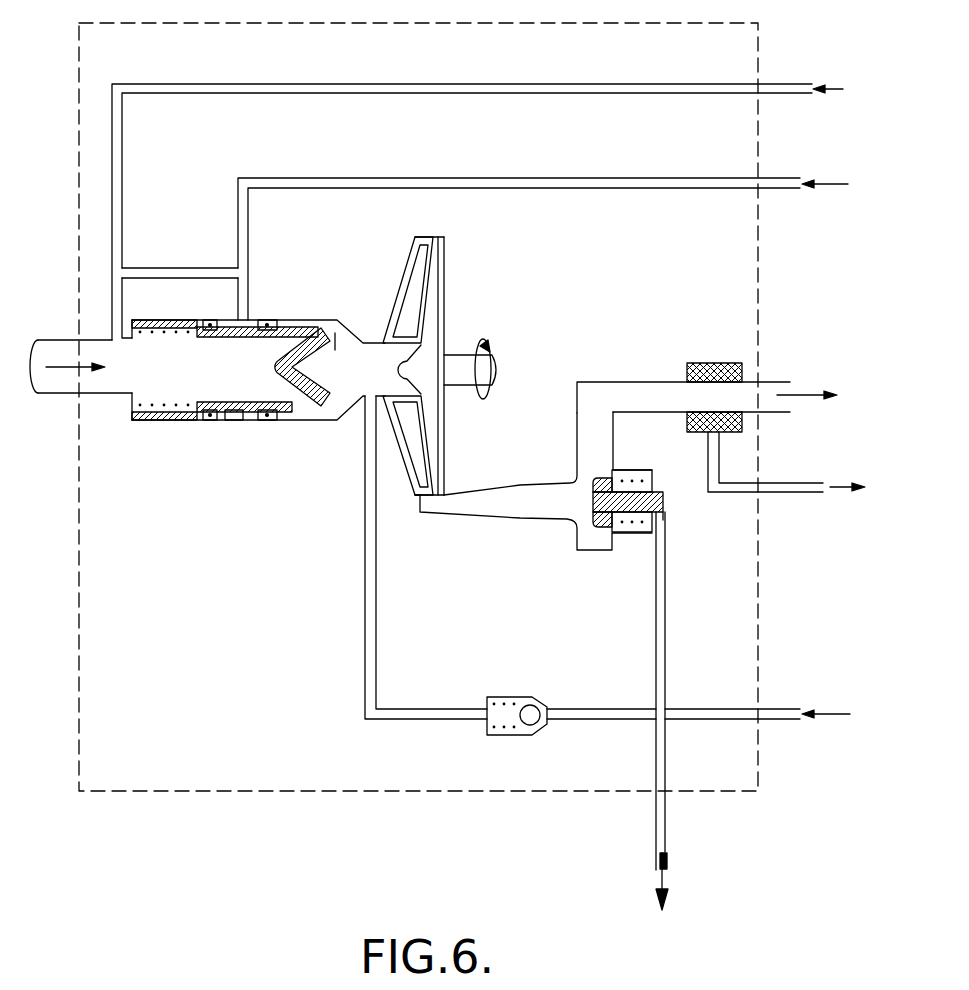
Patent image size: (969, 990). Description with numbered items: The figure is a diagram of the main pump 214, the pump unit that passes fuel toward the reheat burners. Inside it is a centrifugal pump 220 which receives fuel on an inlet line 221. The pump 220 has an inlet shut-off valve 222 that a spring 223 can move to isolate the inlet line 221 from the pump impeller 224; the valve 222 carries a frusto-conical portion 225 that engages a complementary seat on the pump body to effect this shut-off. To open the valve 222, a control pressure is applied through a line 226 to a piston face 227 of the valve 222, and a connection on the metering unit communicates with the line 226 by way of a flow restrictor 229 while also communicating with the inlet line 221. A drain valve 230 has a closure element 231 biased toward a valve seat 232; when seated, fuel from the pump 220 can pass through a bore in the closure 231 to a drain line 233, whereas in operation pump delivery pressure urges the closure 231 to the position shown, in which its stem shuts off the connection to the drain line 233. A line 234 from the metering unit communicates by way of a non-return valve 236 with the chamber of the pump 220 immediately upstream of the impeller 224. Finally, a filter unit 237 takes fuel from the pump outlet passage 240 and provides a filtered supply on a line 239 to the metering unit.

The main pump 214 is at (188, 748).
The centrifugal pump 220 is at (459, 364).
The inlet line 221 is at (58, 390).
The inlet shut-off valve 222 is at (282, 427).
The spring 223 is at (165, 412).
The pump impeller 224 is at (418, 455).
The frusto-conical portion 225 is at (339, 318).
The line 226 is at (597, 182).
The piston face 227 is at (240, 316).
The flow restrictor 229 is at (183, 261).
The drain valve 230 is at (680, 535).
The closure element 231 is at (595, 512).
The valve seat 232 is at (563, 529).
The drain line 233 is at (660, 828).
The line 234 is at (778, 721).
The non-return valve 236 is at (512, 699).
The filter unit 237 is at (705, 361).
The line 239 is at (797, 493).
The pump outlet passage 240 is at (794, 380).